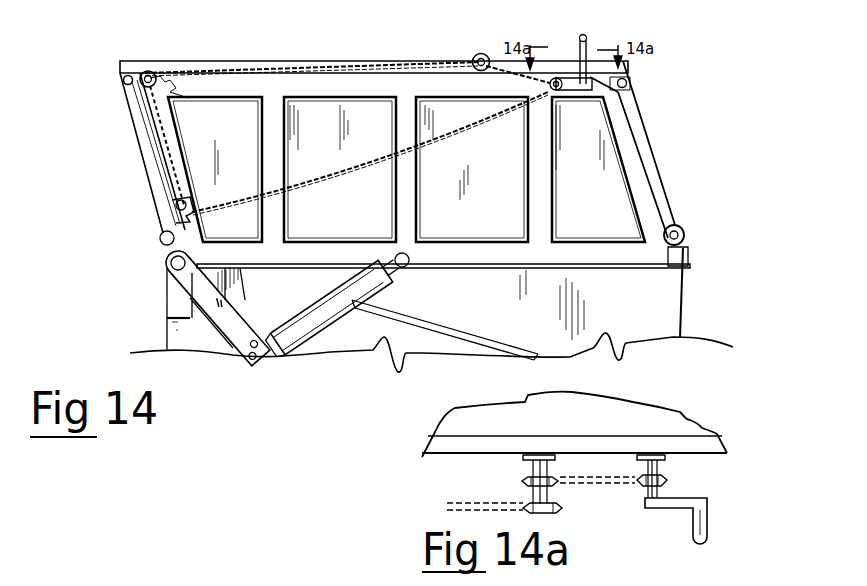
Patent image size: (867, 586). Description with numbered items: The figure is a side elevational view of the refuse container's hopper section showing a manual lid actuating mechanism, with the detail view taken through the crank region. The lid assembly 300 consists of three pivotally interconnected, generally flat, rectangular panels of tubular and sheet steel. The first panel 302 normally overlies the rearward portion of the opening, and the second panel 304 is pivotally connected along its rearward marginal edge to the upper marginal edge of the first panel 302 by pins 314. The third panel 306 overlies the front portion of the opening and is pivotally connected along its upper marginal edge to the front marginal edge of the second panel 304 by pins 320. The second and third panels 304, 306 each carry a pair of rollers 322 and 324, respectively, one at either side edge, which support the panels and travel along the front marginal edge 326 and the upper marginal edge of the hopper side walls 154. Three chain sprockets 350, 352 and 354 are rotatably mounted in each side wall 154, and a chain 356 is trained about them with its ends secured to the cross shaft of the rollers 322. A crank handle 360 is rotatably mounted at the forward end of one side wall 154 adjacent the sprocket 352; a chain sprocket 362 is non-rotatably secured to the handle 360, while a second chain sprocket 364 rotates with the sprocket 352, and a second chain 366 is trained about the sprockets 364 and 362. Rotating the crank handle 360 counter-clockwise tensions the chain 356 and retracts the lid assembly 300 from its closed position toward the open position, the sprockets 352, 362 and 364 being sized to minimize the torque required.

In FIG. 14, the lid assembly 300 is at (660, 70).
In FIG. 14, the first panel 302 is at (133, 123).
In FIG. 14, the second panel 304 is at (265, 61).
In FIG. 14, the third panel 306 is at (650, 134).
In FIG. 14, the pins 314 is at (123, 80).
In FIG. 14, the pins 320 is at (631, 88).
In FIG. 14, the rollers 322 is at (480, 54).
In FIG. 14, the rollers 324 is at (686, 231).
In FIG. 14A, the front marginal edge 326 is at (450, 443).
In FIG. 14, the chain sprocket 350 is at (152, 71).
In FIG. 14A, the chain sprocket 352 is at (562, 509).
In FIG. 14, the chain sprocket 354 is at (176, 205).
In FIG. 14, the chain 356 is at (329, 70).
In FIG. 14A, the chain 356 is at (450, 509).
In FIG. 14, the crank handle 360 is at (586, 34).
In FIG. 14A, the crank handle 360 is at (708, 505).
In FIG. 14A, the chain sprocket 362 is at (668, 480).
In FIG. 14A, the second chain sprocket 364 is at (522, 481).
In FIG. 14A, the second chain 366 is at (569, 481).
In FIG. 14, the side walls 154 is at (352, 227).